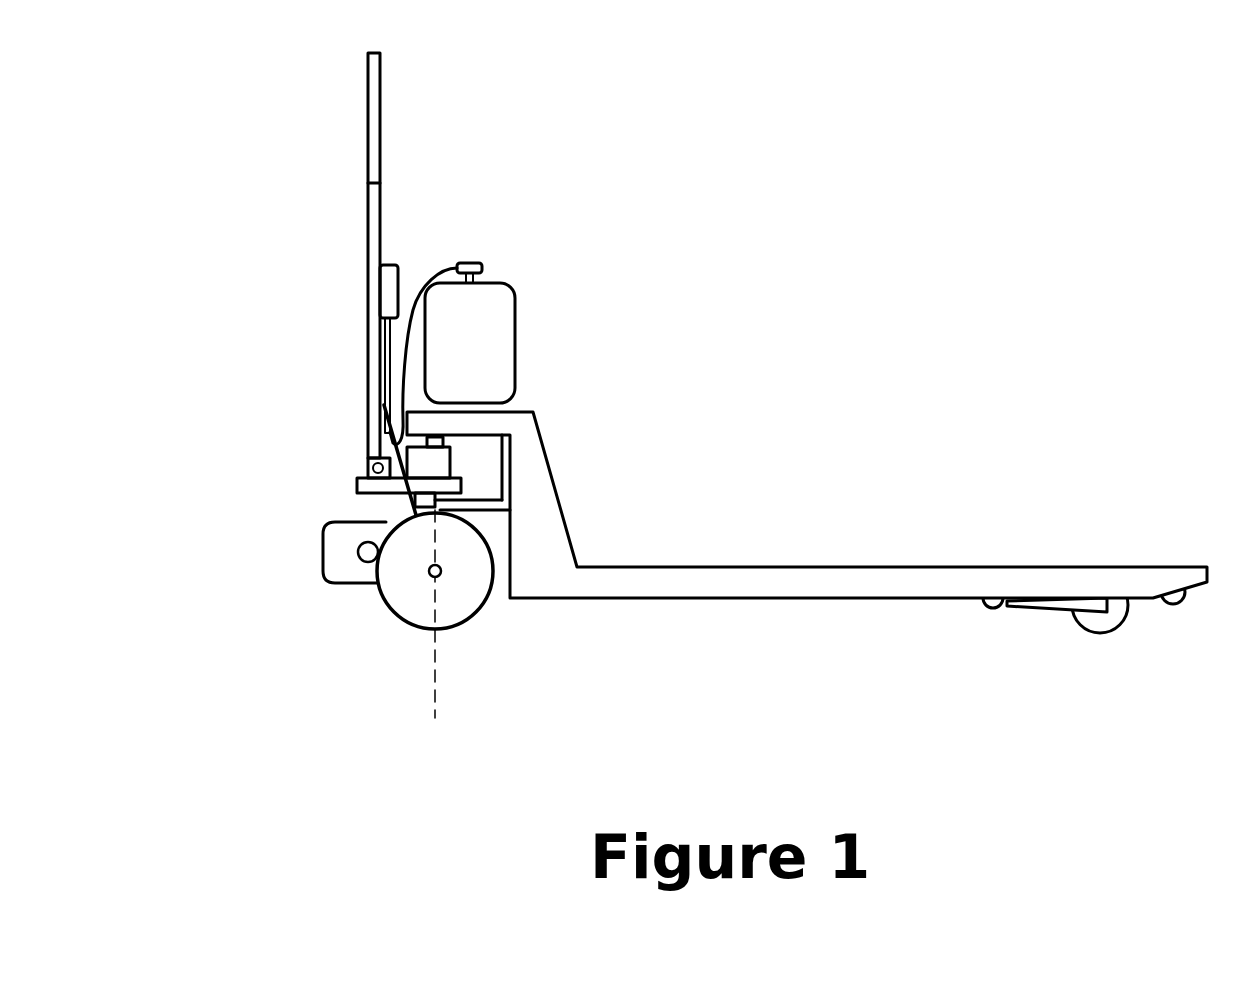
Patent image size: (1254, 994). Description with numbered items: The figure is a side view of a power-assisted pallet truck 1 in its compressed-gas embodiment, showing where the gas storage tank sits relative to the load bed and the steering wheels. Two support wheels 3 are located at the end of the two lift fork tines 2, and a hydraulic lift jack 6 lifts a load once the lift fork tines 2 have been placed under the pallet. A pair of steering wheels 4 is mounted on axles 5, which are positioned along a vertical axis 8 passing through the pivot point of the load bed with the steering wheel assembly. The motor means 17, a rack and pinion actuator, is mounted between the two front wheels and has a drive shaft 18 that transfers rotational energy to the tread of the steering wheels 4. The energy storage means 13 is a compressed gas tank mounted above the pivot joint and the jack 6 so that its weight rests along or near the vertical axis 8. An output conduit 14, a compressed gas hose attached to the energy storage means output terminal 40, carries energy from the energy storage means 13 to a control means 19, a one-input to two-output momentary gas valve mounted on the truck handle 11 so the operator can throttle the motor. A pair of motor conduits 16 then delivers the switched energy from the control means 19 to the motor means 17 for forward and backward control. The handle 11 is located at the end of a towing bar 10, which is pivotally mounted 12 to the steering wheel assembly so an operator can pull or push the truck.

The power-assisted pallet truck 1 is at (1034, 157).
The lift fork tines 2 is at (883, 578).
The support wheels 3 is at (1104, 630).
The steering wheels 4 is at (437, 625).
The axles 5 is at (440, 577).
The hydraulic lift jack 6 is at (430, 468).
The vertical axis 8 is at (436, 697).
The towing bar 10 is at (368, 385).
The truck handle 11 is at (367, 127).
The pivotal mounting 12 is at (368, 462).
The energy storage means 13 is at (498, 328).
The output conduit 14 is at (440, 265).
The motor conduits 16 is at (357, 488).
The motor means 17 is at (342, 551).
The drive shaft 18 is at (366, 562).
The control means 19 is at (410, 130).
The energy storage means output terminal 40 is at (477, 262).